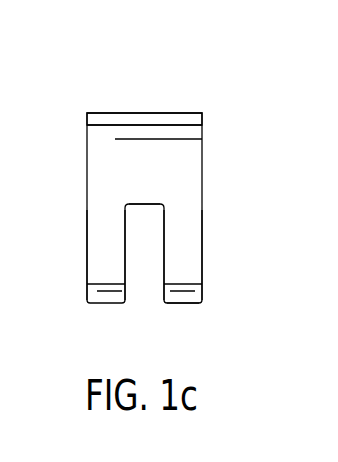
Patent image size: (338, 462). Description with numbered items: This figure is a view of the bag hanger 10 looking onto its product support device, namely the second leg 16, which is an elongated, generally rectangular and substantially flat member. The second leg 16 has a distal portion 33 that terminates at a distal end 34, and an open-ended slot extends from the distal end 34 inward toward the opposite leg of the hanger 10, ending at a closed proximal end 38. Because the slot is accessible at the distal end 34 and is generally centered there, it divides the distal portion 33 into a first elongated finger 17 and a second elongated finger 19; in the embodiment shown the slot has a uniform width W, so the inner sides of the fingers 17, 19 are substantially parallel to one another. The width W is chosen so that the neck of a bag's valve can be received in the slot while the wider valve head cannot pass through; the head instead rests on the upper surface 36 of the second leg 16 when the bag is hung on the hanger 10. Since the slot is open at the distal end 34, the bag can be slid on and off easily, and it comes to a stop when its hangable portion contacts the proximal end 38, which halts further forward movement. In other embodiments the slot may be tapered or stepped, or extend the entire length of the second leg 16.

The hanger 10 is at (63, 137).
The second leg 16 is at (195, 207).
The first elongated finger 17 is at (115, 254).
The second elongated finger 19 is at (192, 254).
The distal portion 33 is at (80, 207).
The distal end 34 is at (190, 303).
The upper surface 36 is at (130, 168).
The proximal end 38 is at (147, 201).
The width W is at (163, 307).